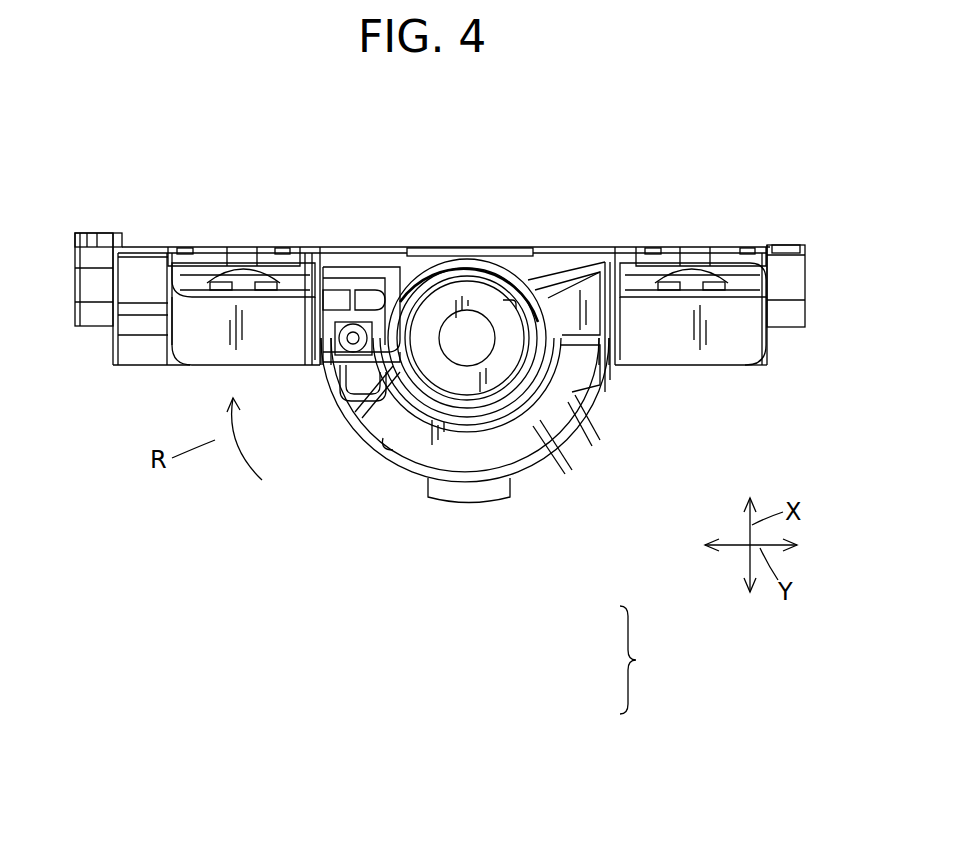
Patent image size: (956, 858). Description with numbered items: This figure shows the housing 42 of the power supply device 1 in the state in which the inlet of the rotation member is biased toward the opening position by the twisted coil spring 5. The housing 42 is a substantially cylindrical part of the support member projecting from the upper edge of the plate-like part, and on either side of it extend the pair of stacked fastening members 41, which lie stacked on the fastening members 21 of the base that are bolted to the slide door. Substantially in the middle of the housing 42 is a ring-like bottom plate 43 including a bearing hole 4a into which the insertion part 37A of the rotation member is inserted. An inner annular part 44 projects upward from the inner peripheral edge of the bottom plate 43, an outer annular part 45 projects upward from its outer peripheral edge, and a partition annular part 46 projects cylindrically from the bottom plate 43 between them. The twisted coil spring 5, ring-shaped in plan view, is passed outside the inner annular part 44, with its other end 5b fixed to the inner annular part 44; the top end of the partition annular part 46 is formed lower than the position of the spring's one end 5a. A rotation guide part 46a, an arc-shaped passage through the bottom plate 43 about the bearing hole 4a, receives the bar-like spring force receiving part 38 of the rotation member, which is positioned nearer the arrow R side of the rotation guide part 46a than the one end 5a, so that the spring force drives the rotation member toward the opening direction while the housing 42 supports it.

The power supply device 1 is at (802, 126).
The fastening member 21 is at (215, 246).
The stacked fastening member 41 is at (200, 276).
The twisted coil spring 5 is at (460, 270).
The one end of the twisted coil spring 5a is at (360, 378).
The other end of the twisted coil spring 5b is at (363, 268).
The insertion part 37A is at (492, 298).
The bearing hole 4a is at (515, 304).
The spring force receiving part 38 is at (345, 340).
The housing 42 is at (632, 660).
The bottom plate 43 is at (590, 355).
The inner annular part 44 is at (520, 390).
The outer annular part 45 is at (580, 415).
The partition annular part 46 is at (505, 425).
The rotation guide part 46a is at (390, 445).